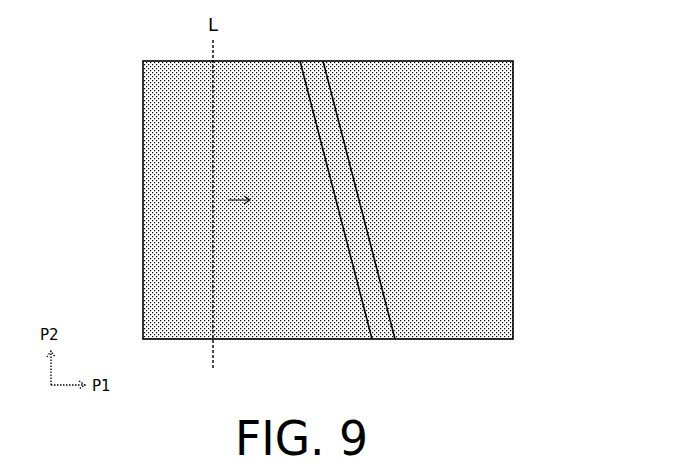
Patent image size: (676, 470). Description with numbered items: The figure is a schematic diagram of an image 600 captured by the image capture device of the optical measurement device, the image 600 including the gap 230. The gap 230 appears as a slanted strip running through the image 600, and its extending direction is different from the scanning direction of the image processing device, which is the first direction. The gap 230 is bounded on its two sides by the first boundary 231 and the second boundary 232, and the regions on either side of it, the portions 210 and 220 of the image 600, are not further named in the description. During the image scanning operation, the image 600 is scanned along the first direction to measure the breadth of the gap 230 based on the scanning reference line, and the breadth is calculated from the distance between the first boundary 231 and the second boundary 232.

The first region 210 is at (143, 85).
The second region 220 is at (468, 60).
The gap 230 is at (321, 60).
The first boundary 231 is at (303, 90).
The second boundary 232 is at (345, 96).
The image 600 is at (516, 232).